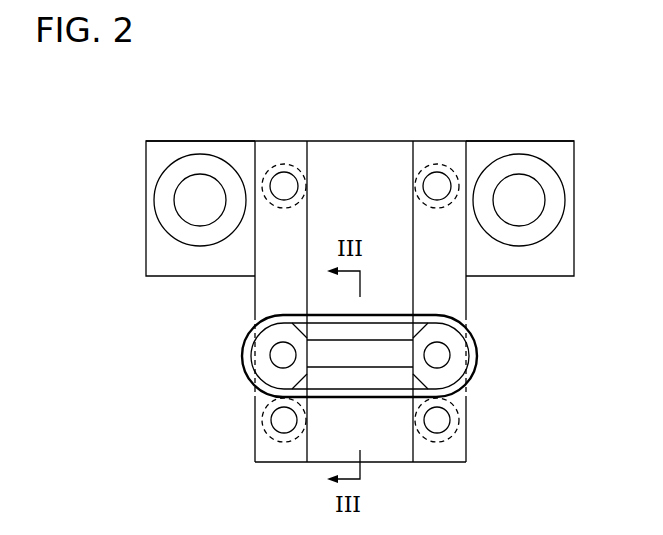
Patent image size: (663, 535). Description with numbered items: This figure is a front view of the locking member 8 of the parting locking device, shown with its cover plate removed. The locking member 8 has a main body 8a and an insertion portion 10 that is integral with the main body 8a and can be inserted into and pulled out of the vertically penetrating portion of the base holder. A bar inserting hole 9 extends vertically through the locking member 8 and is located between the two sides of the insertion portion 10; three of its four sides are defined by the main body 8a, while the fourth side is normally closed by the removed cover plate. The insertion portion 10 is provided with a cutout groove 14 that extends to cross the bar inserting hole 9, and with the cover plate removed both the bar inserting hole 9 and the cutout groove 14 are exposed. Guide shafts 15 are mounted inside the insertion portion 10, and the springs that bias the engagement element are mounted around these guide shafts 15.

The locking member 8 is at (435, 141).
The main body 8a is at (538, 141).
The bar inserting hole 9 is at (341, 160).
The insertion portion 10 is at (457, 448).
The cutout groove 14 is at (258, 328).
The guide shafts 15 is at (283, 355).